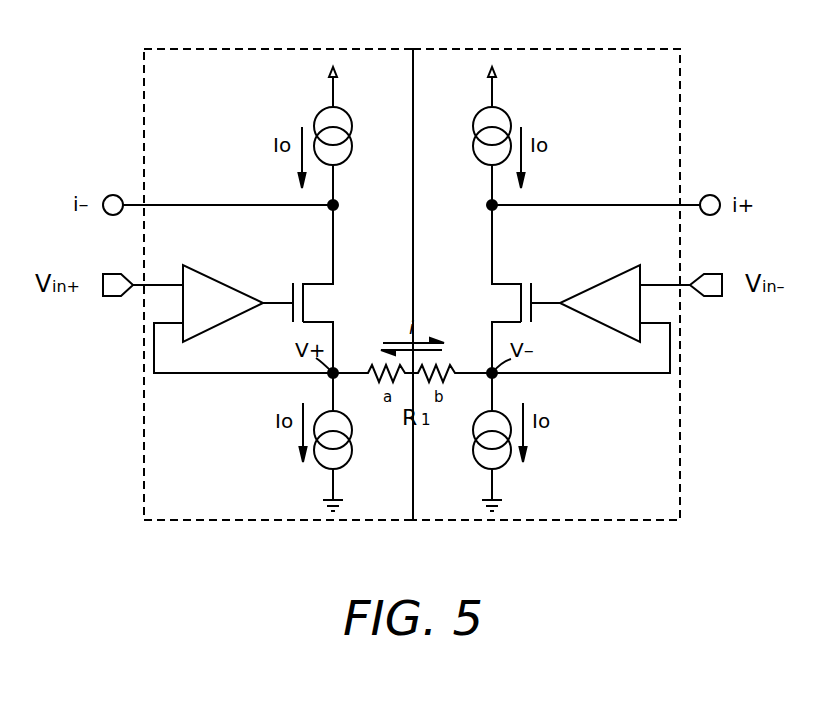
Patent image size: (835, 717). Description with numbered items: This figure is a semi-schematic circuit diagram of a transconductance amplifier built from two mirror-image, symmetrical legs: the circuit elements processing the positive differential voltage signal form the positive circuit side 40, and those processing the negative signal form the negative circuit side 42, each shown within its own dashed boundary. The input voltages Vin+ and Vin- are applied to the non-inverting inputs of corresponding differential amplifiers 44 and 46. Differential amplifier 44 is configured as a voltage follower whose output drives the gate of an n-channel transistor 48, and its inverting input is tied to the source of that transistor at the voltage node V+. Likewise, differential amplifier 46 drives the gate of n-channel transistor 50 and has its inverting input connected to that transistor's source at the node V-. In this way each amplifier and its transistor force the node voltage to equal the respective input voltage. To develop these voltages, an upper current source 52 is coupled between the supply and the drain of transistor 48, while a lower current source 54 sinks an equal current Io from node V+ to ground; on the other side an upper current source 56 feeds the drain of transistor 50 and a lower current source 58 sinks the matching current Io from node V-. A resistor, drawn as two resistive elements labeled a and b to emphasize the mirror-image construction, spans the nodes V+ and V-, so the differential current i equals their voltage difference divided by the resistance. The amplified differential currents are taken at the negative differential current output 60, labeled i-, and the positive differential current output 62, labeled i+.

The positive circuit side 40 is at (307, 49).
The negative circuit side 42 is at (577, 49).
The differential amplifier 44 is at (232, 291).
The differential amplifier 46 is at (591, 299).
The n-channel transistor 48 is at (332, 301).
The n-channel transistor 50 is at (500, 303).
The upper current source 52 is at (314, 118).
The lower current source 54 is at (325, 461).
The upper current source 56 is at (501, 120).
The lower current source 58 is at (501, 461).
The negative differential current output 60 is at (113, 195).
The positive differential current output 62 is at (710, 195).